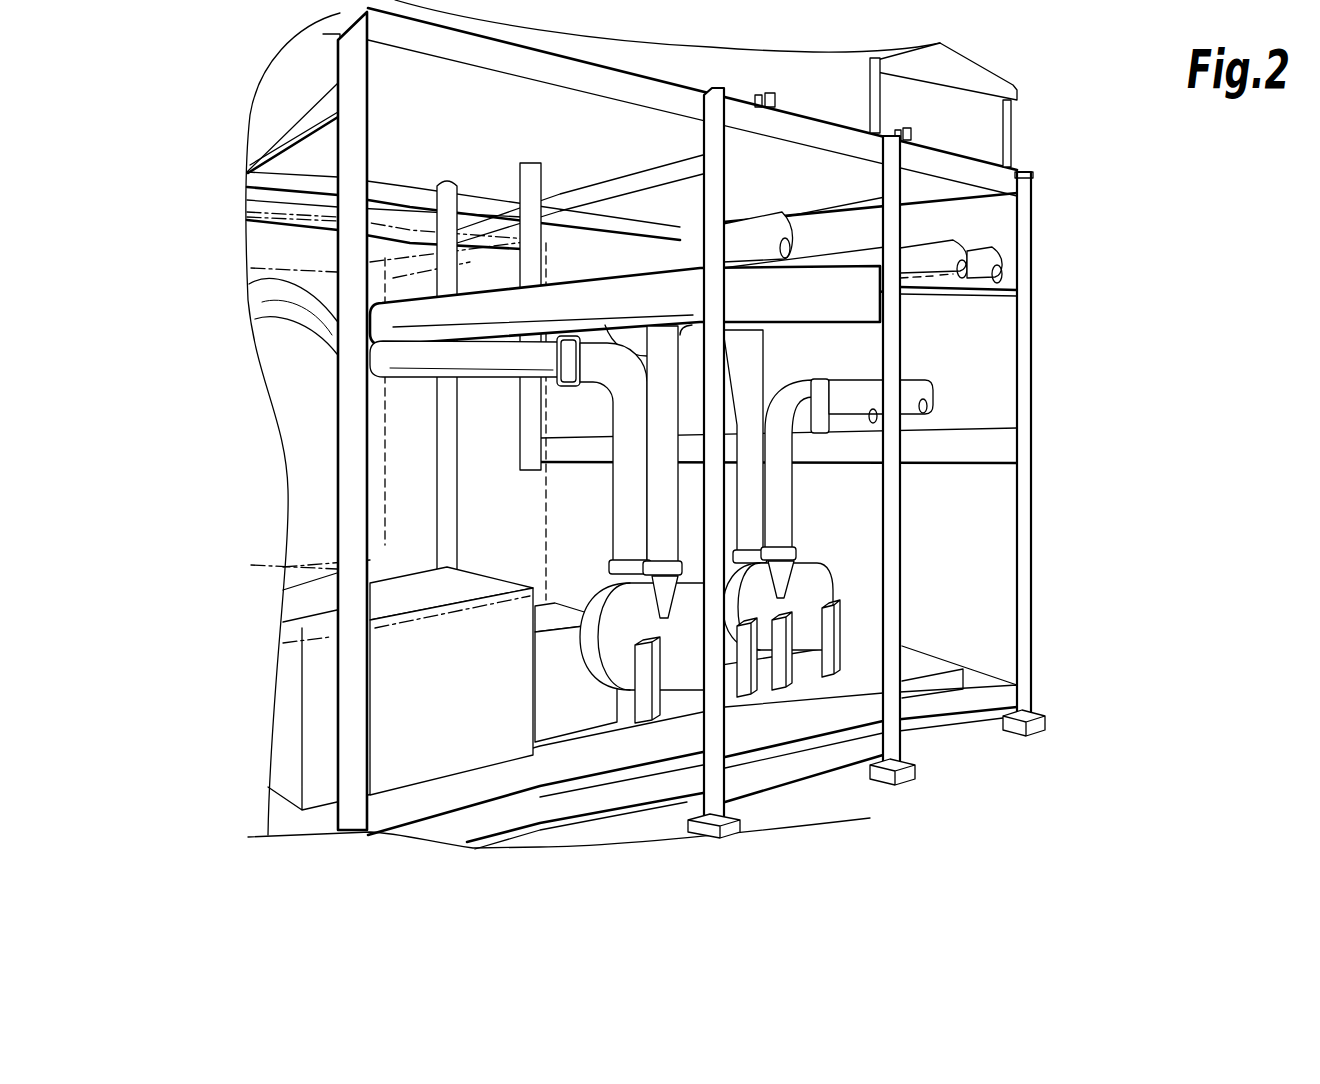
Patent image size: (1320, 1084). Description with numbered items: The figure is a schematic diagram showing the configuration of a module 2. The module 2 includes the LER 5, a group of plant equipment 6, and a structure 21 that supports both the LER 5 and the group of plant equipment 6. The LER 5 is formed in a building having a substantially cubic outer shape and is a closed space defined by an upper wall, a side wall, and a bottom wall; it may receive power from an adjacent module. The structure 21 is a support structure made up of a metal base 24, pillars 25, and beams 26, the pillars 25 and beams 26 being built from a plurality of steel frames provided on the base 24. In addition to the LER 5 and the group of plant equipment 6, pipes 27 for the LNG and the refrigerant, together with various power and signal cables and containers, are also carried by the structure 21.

The module 2 is at (1002, 52).
The LER 5 is at (282, 355).
The group of plant equipment 6 is at (845, 575).
The structure 21 is at (1037, 366).
The base 24 is at (960, 720).
The pillars 25 is at (352, 515).
The beams 26 is at (253, 205).
The pipes 27 is at (663, 348).